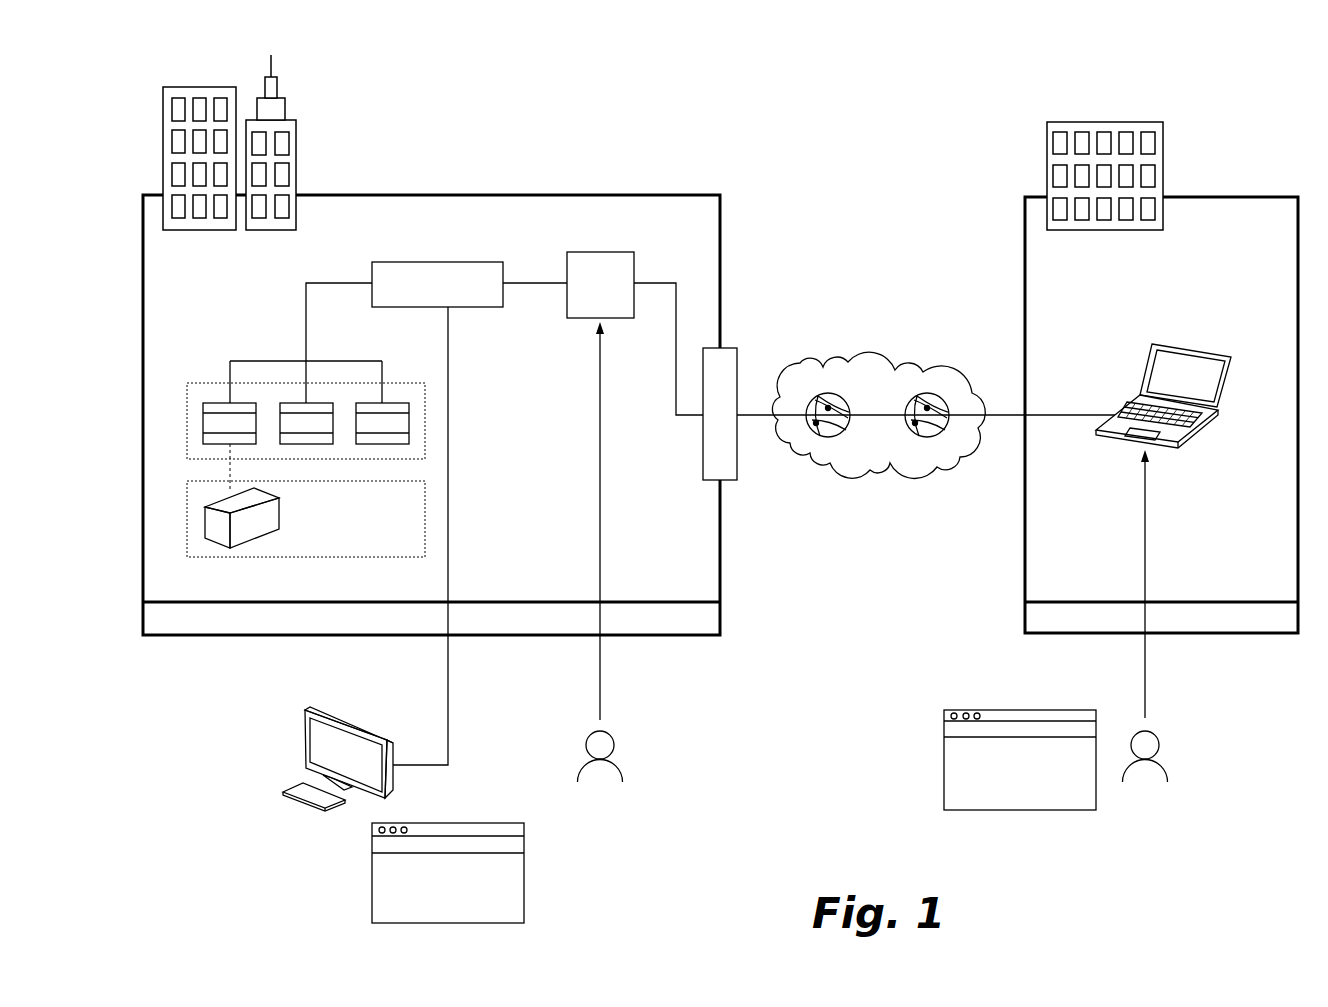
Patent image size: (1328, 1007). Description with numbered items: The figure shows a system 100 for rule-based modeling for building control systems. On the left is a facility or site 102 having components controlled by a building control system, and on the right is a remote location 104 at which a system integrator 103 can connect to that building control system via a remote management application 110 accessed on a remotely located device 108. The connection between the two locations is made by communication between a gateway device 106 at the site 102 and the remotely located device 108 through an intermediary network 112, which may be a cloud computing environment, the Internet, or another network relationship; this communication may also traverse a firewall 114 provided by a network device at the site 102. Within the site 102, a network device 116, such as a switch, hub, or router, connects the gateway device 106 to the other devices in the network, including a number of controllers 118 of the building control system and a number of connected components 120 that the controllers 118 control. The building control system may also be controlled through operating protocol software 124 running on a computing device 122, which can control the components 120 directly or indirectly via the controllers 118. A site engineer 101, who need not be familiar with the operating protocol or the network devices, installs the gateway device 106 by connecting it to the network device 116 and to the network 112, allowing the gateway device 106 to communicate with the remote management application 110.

The system 100 is at (154, 57).
The site engineer 101 is at (595, 770).
The facility (site) 102 is at (681, 168).
The system integrator 103 is at (1150, 768).
The remote location 104 is at (1261, 167).
The gateway device 106 is at (605, 256).
The remotely located device 108 is at (1157, 372).
The remote management application 110 is at (944, 764).
The network 112 is at (872, 360).
The firewall 114 is at (725, 465).
The network device 116 is at (432, 268).
The controllers 118 is at (193, 421).
The connected components 120 is at (193, 518).
The computing device 122 is at (302, 748).
The operating protocol software 124 is at (374, 880).